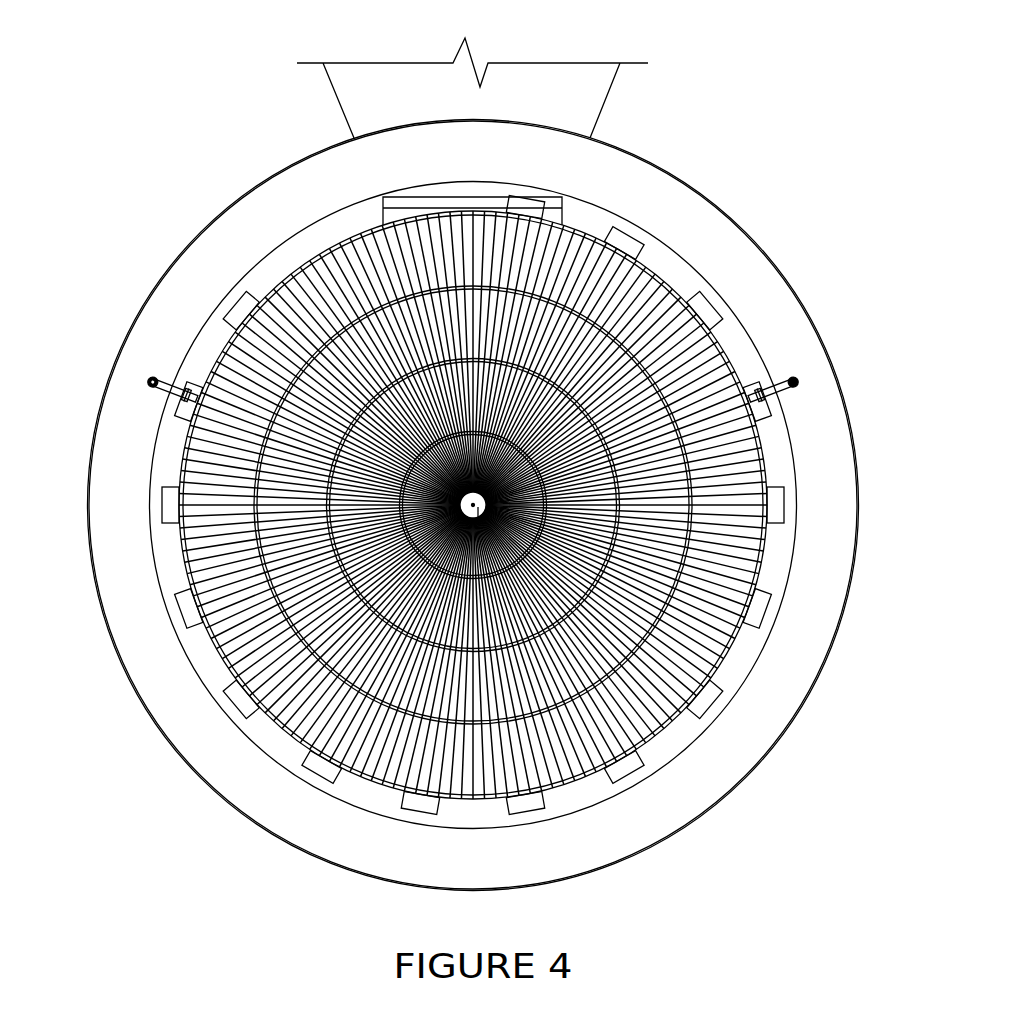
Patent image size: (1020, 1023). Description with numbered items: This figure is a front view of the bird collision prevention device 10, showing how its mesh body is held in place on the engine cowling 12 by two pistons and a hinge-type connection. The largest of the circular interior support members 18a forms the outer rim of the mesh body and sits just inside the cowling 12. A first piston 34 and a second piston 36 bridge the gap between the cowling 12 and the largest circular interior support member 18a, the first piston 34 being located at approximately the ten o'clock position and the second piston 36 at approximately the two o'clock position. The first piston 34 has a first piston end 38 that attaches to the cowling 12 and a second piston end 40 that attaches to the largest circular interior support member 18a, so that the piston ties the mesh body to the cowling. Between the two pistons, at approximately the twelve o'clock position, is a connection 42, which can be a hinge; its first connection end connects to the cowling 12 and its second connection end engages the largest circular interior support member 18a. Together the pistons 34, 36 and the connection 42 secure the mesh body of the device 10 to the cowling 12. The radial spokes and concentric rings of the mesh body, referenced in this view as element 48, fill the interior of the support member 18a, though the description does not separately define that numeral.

The bird collision prevention device 10 is at (770, 196).
The cowling 12 is at (225, 220).
The largest circular interior support member 18a is at (233, 710).
The first piston 34 is at (168, 388).
The second piston 36 is at (777, 392).
The first piston end 38 is at (158, 372).
The second piston end 40 is at (190, 405).
The connection 42 is at (562, 208).
The rotor wheel 48 is at (490, 603).